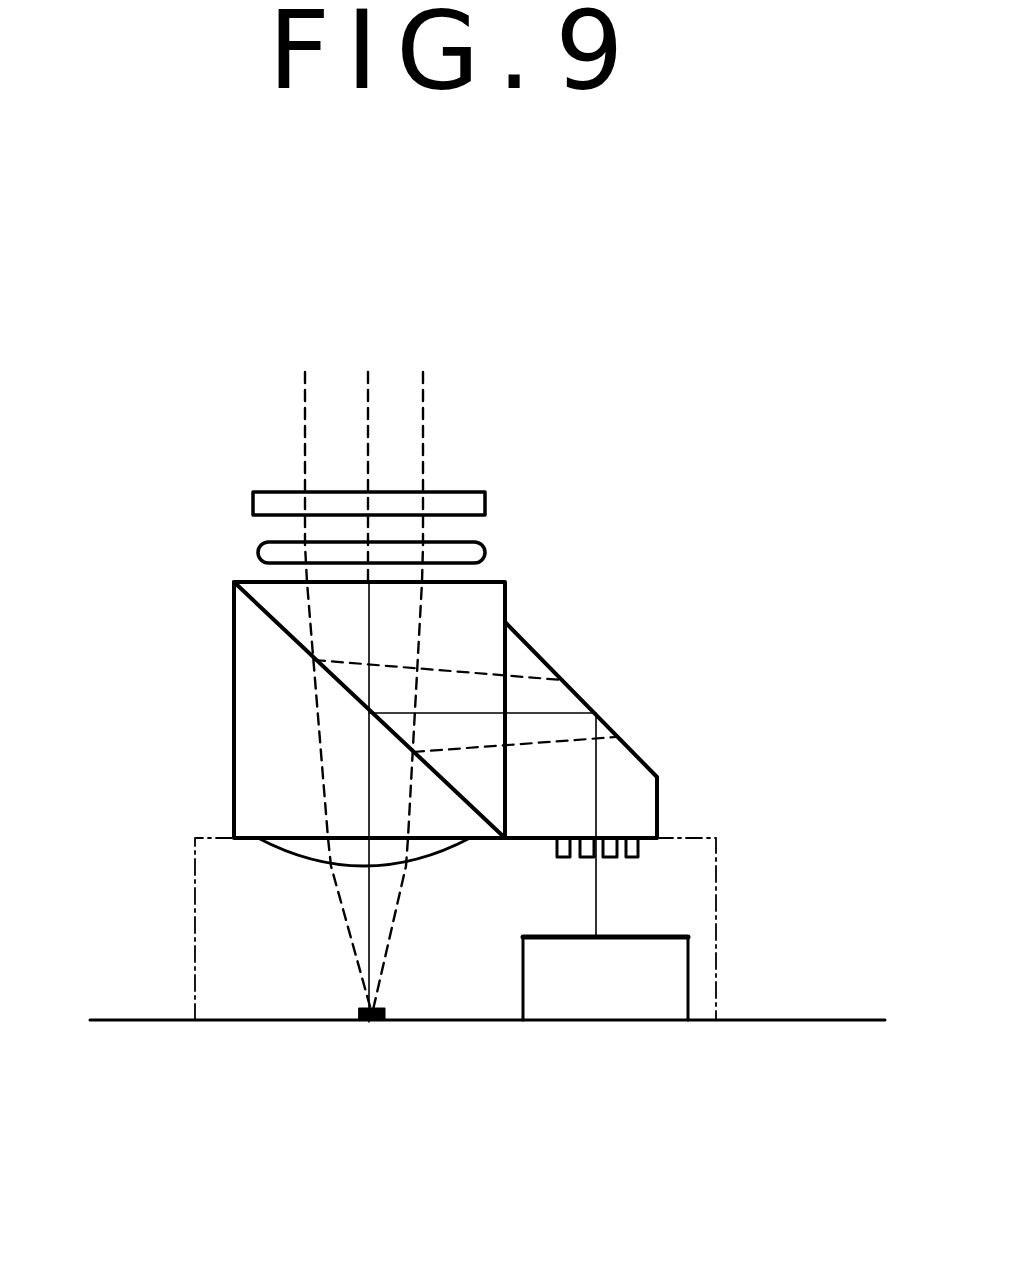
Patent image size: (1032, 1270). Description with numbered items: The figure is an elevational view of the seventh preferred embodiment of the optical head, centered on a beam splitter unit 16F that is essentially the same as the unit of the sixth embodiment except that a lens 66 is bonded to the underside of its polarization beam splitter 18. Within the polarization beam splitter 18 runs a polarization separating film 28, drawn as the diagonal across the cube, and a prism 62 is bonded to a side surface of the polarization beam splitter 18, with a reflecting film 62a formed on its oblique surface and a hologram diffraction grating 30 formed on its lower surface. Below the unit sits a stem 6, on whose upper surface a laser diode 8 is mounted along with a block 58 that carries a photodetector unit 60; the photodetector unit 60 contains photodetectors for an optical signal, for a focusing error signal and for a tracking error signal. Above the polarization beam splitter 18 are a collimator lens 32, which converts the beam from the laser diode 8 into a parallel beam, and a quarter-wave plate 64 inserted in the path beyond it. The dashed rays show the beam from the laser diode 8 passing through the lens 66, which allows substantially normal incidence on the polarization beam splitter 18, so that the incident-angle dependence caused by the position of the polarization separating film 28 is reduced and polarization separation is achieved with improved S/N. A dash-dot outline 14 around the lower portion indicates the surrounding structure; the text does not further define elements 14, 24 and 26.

The stem 6 is at (835, 1018).
The laser diode 8 is at (369, 1022).
The optical head housing outline 14 is at (720, 925).
The beam splitter unit 16F is at (533, 623).
The polarization beam splitter 18 is at (233, 768).
The optical axis / prism portion 24 is at (260, 694).
The prism surface 26 is at (500, 580).
The polarization separating film 28 is at (270, 620).
The hologram diffraction grating 30 is at (557, 860).
The collimator lens 32 is at (258, 545).
The block 58 is at (610, 1005).
The photodetector unit 60 is at (643, 933).
The prism 62 is at (652, 770).
The reflecting film 62a is at (582, 697).
The quarter-wave plate 64 is at (463, 490).
The lens 66 is at (290, 858).